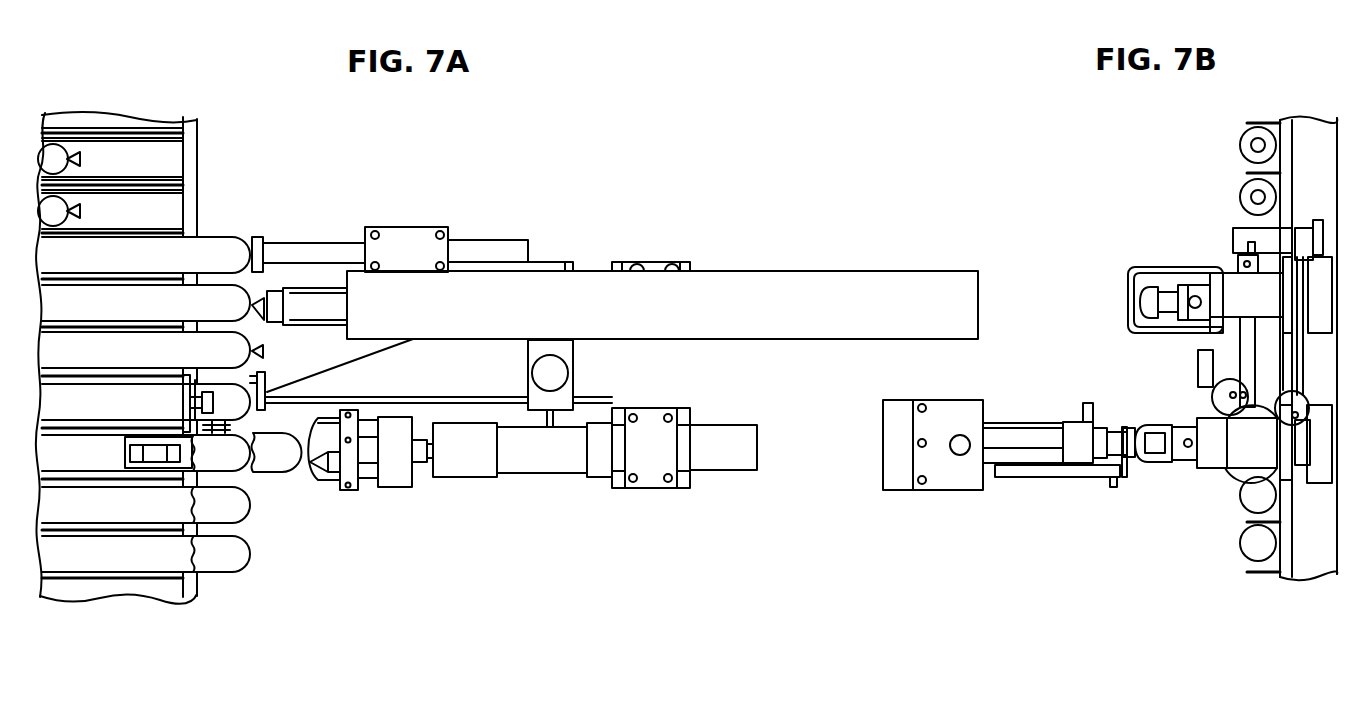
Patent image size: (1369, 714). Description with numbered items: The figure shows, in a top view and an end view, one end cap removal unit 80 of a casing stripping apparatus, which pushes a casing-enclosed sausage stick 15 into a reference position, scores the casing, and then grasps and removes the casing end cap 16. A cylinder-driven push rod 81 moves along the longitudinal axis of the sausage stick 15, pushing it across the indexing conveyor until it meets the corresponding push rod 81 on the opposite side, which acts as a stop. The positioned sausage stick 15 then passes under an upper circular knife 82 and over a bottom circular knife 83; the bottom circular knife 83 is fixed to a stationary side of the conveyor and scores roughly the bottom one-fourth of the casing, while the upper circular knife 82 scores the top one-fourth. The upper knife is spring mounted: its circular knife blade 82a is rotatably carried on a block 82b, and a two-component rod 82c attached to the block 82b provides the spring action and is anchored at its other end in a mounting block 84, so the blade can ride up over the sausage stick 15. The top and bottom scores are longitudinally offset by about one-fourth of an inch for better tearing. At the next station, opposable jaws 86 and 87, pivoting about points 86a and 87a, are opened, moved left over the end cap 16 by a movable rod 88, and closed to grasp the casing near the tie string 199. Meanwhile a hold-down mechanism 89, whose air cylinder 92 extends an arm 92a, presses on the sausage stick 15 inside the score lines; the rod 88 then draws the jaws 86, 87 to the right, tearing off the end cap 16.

In FIG. 7A, the sausage stick 15 is at (47, 148).
In FIG. 7A, the casing end cap 16 is at (282, 465).
In FIG. 7A, the end cap removal unit 80 is at (720, 206).
In FIG. 7A, the push rod 81 is at (313, 249).
In FIG. 7B, the upper circular knife 82 is at (1210, 398).
In FIG. 7A, the circular knife blade 82a is at (187, 383).
In FIG. 7A, the block 82b is at (183, 380).
In FIG. 7A, the rod 82c is at (250, 375).
In FIG. 7A, the bottom circular knife 83 is at (232, 428).
In FIG. 7B, the bottom circular knife 83 is at (1290, 395).
In FIG. 7A, the mounting block 84 is at (572, 345).
In FIG. 7A, the jaw 86 is at (328, 422).
In FIG. 7A, the pivot point 86a is at (350, 450).
In FIG. 7A, the jaw 87 is at (322, 482).
In FIG. 7A, the pivot point 87a is at (357, 490).
In FIG. 7A, the movable rod 88 is at (485, 468).
In FIG. 7A, the hold-down mechanism 89 is at (183, 473).
In FIG. 7B, the hold-down mechanism 89 is at (1188, 458).
In FIG. 7B, the air cylinder 92 is at (1025, 435).
In FIG. 7B, the arm 92a is at (1133, 455).
In FIG. 7A, the string 199 is at (252, 304).